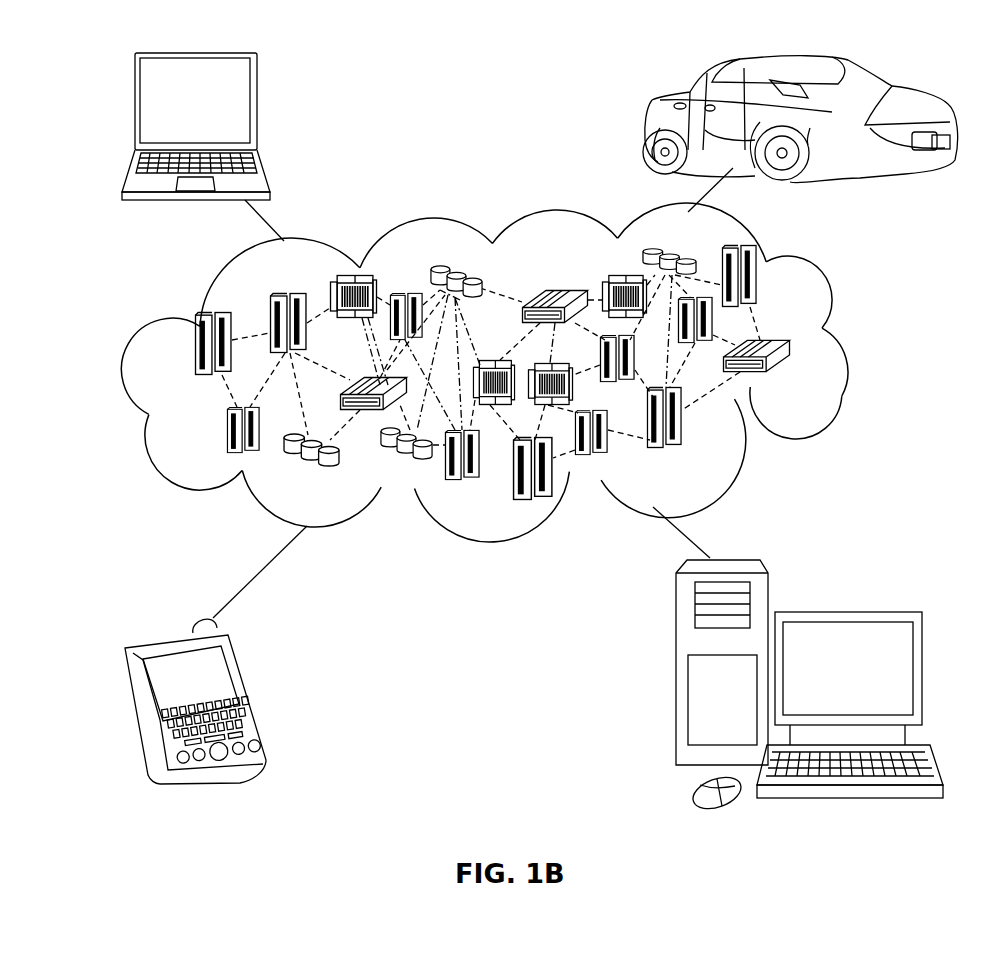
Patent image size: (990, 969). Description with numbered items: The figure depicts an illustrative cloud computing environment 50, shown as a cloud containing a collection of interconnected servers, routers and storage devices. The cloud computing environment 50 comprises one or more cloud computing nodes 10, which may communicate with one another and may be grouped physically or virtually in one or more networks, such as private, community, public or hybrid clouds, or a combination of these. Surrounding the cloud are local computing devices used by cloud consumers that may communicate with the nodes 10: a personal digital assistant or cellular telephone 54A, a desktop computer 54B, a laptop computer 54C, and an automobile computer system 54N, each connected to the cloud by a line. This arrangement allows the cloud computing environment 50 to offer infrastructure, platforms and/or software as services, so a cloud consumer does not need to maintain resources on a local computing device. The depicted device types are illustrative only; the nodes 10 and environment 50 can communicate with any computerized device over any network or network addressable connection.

The cloud computing node 10 is at (793, 380).
The cloud computing environment 50 is at (845, 352).
The personal digital assistant or cellular telephone 54A is at (258, 694).
The desktop computer 54B is at (845, 612).
The laptop computer 54C is at (258, 109).
The automobile computer system 54N is at (650, 118).